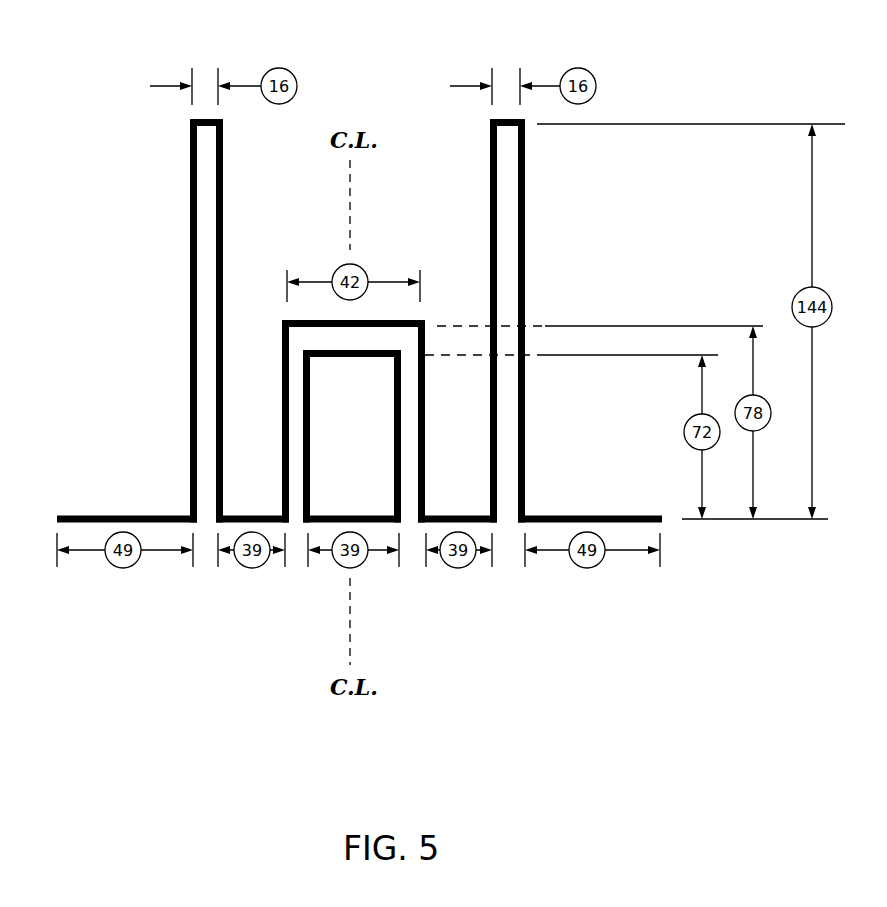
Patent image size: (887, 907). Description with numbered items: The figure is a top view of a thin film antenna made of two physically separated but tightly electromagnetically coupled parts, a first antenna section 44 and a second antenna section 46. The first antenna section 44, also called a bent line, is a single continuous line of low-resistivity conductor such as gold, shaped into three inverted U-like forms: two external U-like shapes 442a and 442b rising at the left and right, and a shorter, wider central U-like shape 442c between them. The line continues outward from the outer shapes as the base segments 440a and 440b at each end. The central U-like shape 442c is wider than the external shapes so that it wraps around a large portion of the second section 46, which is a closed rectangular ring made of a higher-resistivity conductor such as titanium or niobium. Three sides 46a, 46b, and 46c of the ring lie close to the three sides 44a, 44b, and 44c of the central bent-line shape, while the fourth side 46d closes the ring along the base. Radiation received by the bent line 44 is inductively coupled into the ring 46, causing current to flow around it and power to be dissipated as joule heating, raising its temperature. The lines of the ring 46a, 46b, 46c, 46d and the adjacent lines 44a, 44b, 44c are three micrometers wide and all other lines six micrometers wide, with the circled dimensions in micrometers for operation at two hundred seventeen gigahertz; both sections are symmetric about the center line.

The first antenna section 44 is at (188, 308).
The first side of first antenna section 44a is at (284, 362).
The second side of first antenna section 44b is at (311, 320).
The third side of first antenna section 44c is at (425, 392).
The second antenna section 46 is at (328, 440).
The first side of rectangular ring 46a is at (307, 427).
The second side of rectangular ring 46b is at (385, 357).
The third side of rectangular ring 46c is at (397, 447).
The fourth side of rectangular ring 46d is at (318, 517).
The left base segment 440a is at (110, 513).
The right base segment 440b is at (560, 517).
The first external U-like shape 442a is at (198, 117).
The second external U-like shape 442b is at (501, 117).
The central U-like shape 442c is at (400, 320).